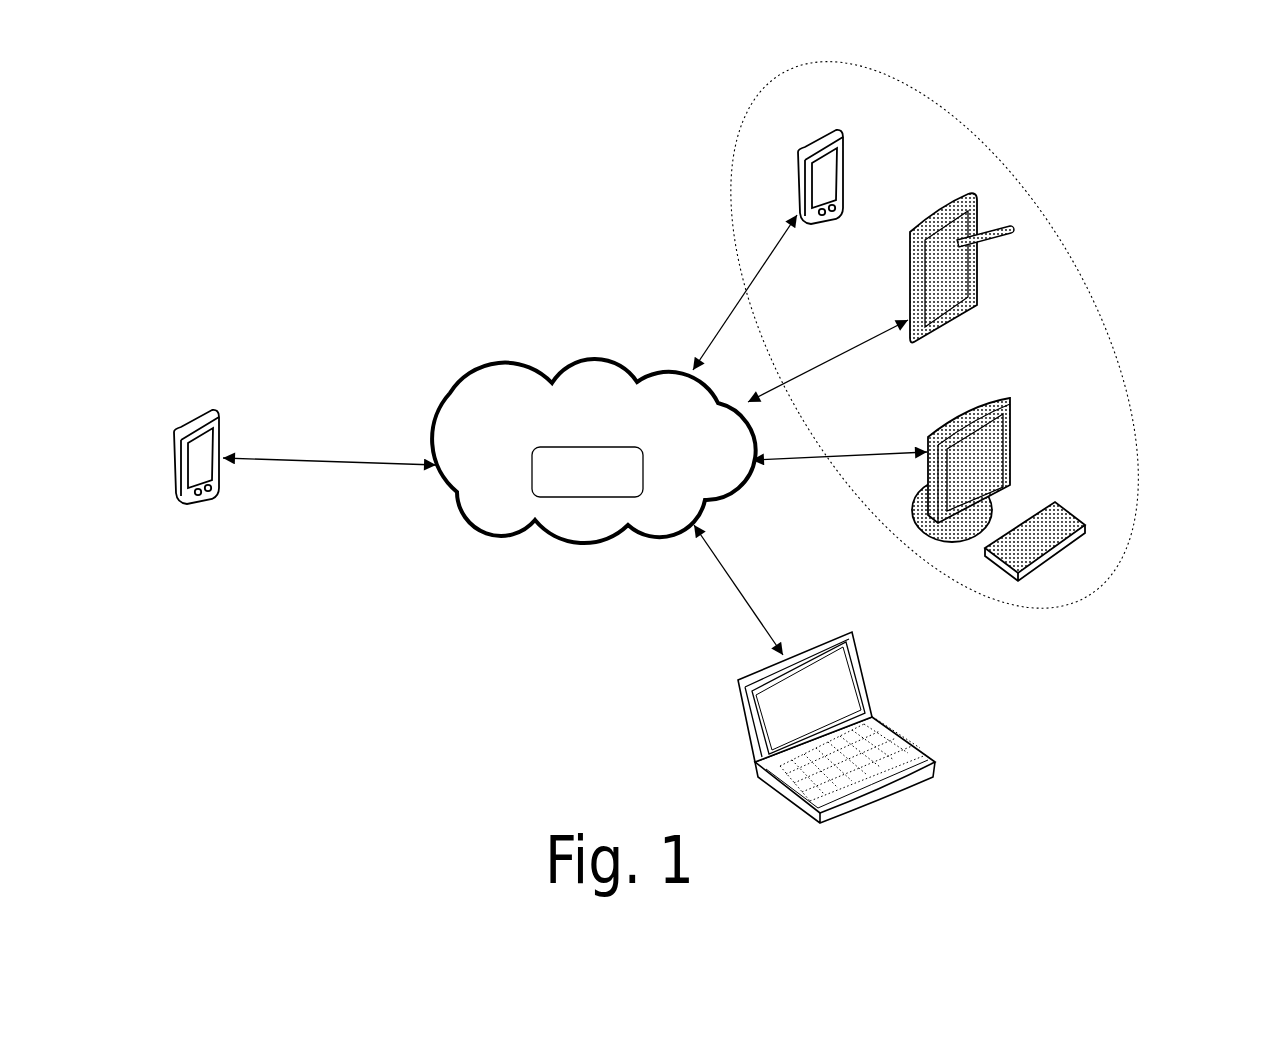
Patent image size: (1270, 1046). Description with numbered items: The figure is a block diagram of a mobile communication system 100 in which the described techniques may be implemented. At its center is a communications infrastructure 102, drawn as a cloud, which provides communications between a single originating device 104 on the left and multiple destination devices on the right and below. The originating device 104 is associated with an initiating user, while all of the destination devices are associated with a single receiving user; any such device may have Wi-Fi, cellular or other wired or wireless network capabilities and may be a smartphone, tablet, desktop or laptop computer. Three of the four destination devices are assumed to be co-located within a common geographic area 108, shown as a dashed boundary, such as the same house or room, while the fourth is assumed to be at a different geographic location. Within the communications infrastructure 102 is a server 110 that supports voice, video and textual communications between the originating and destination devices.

The mobile communication system 100 is at (1165, 92).
The communications infrastructure 102 is at (595, 368).
The originating device 104 is at (209, 415).
The common geographic area 108 is at (1067, 248).
The server 110 is at (538, 465).